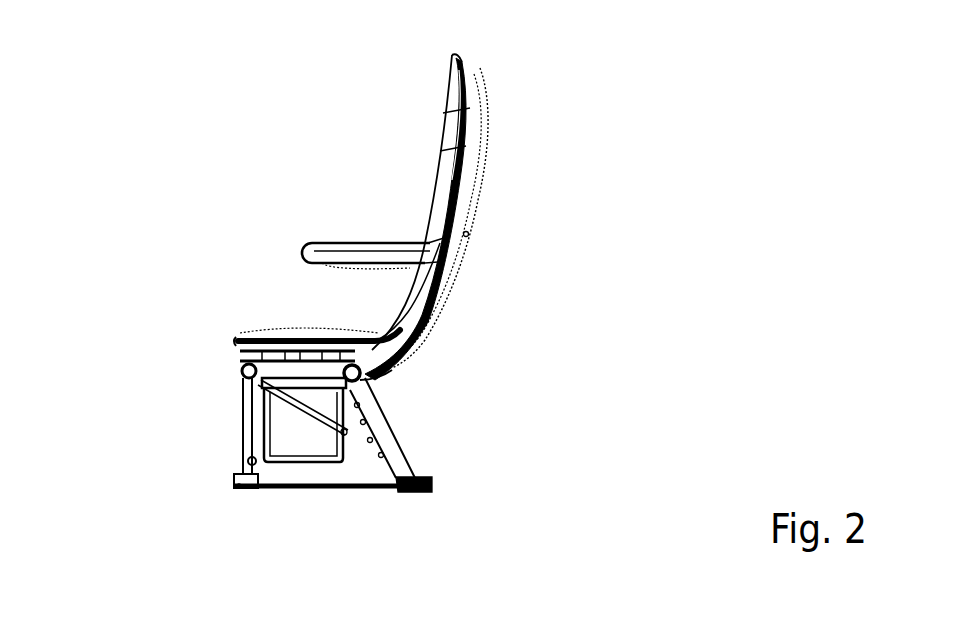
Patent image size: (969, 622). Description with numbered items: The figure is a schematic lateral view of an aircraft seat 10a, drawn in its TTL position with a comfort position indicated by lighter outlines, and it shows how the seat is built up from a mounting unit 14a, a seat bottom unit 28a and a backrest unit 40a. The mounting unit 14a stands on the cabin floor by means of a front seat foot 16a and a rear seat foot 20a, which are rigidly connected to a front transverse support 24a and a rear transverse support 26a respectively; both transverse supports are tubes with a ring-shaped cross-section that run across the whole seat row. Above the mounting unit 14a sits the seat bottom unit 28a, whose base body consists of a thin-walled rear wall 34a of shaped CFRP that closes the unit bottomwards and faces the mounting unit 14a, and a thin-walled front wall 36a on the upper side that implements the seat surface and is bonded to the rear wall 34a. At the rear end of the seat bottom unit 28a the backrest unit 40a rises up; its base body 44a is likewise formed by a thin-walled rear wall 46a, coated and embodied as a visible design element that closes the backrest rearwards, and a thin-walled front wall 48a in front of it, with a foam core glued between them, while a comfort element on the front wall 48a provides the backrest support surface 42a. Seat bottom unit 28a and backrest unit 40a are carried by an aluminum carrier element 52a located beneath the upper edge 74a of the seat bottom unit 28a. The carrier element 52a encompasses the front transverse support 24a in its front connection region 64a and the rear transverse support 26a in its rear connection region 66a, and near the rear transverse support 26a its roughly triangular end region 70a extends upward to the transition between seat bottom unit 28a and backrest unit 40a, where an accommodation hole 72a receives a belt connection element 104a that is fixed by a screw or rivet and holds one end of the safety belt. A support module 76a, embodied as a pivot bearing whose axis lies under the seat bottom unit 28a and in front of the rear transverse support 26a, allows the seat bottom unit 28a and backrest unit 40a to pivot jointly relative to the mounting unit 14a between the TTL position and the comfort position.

The aircraft seat 10a is at (413, 90).
The mounting unit 14a is at (185, 357).
The front seat foot 16a is at (243, 445).
The rear seat foot 20a is at (362, 423).
The front transverse support 24a is at (232, 350).
The rear transverse support 26a is at (377, 375).
The seat bottom unit 28a is at (298, 303).
The thin-walled rear wall 34a is at (232, 344).
The thin-walled front wall 36a is at (268, 327).
The backrest unit 40a is at (450, 114).
The backrest support surface 42a is at (423, 108).
The base body 44a is at (443, 150).
The thin-walled rear wall 46a is at (457, 56).
The thin-walled front wall 48a is at (440, 124).
The carrier element 52a is at (280, 378).
The front connection region 64a is at (236, 372).
The rear connection region 66a is at (365, 378).
The end region 70a is at (388, 360).
The accommodation hole 72a is at (427, 337).
The upper edge 74a is at (236, 340).
The support module 76a is at (327, 395).
The belt connection element 104a is at (376, 333).